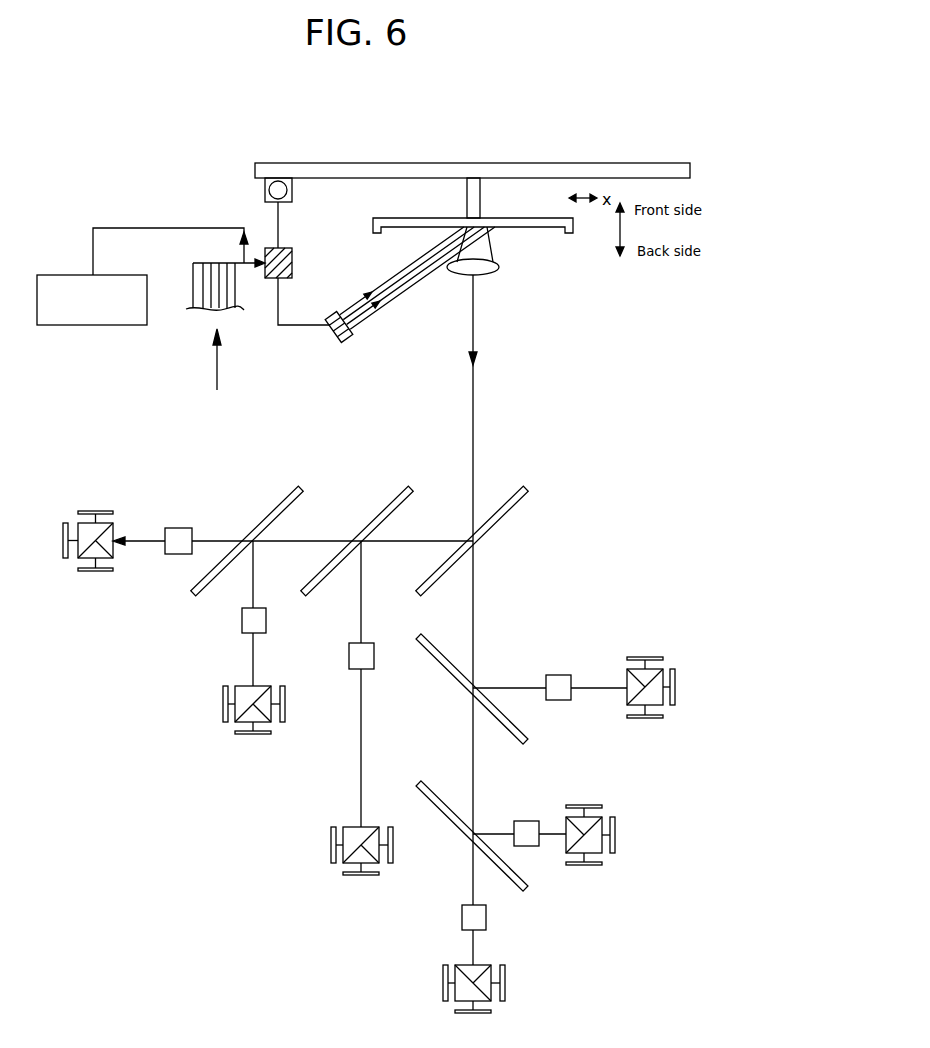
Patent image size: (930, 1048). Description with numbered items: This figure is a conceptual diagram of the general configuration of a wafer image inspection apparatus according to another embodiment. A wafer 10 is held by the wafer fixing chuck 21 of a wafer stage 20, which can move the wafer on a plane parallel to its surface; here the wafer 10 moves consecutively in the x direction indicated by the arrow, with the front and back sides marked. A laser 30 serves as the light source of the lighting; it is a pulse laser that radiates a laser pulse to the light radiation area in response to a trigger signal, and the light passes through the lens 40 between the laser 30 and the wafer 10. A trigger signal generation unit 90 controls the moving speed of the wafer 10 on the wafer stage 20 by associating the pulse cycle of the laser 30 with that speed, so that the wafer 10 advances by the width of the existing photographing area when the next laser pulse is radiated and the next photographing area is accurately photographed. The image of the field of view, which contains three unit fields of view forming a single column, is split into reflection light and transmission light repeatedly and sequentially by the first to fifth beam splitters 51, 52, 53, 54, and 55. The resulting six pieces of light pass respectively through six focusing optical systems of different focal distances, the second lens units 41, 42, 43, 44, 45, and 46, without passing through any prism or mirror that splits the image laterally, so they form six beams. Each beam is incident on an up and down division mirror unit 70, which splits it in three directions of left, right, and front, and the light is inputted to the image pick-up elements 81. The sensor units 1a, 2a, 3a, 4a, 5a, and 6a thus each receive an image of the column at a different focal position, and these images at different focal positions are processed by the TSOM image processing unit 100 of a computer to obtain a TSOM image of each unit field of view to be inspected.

The wafer 10 is at (547, 240).
The wafer stage 20 is at (404, 172).
The wafer fixing chuck 21 is at (466, 203).
The laser 30 is at (341, 338).
The lens 40 is at (482, 279).
The second lens unit 41 is at (178, 528).
The second lens unit 42 is at (242, 628).
The second lens unit 43 is at (349, 652).
The second lens unit 44 is at (486, 917).
The second lens unit 45 is at (527, 821).
The second lens unit 46 is at (558, 675).
The first beam splitter 51 is at (490, 515).
The second beam splitter 52 is at (373, 515).
The third beam splitter 53 is at (445, 658).
The fourth beam splitter 54 is at (264, 515).
The fifth beam splitter 55 is at (445, 806).
The up and down division mirror unit 70 is at (115, 522).
The image pick-up element 81 is at (298, 784).
The trigger signal generation unit 90 is at (290, 250).
The TSOM image processing unit 100 is at (46, 275).
The image 1a is at (150, 610).
The image 2a is at (260, 715).
The image 3a is at (371, 858).
The fourth sensor unit 4a is at (474, 975).
The fifth sensor unit 5a is at (600, 826).
The sixth sensor unit 6a is at (660, 679).